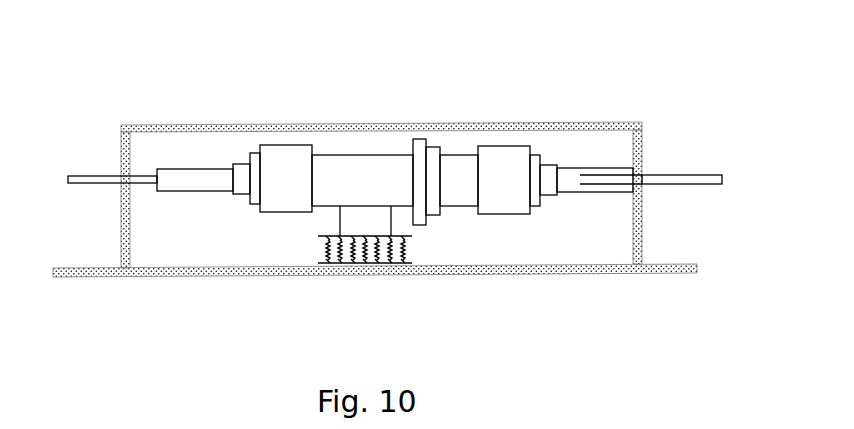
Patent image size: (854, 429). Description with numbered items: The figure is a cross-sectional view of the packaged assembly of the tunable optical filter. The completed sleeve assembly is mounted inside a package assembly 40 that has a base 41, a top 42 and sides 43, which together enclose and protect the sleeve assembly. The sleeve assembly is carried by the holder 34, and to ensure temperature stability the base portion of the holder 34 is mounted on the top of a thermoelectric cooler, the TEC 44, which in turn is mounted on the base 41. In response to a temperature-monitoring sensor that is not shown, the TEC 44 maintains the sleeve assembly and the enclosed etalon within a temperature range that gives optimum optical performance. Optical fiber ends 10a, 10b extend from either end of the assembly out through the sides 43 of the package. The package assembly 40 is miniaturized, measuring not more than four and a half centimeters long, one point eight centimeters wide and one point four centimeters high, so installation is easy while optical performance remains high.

The package assembly 40 is at (246, 60).
The base 41 is at (500, 273).
The top 42 is at (490, 127).
The sides 43 is at (123, 223).
The optical fiber input end 10a is at (98, 178).
The optical fiber output end 10b is at (687, 172).
The holder 34 is at (347, 196).
The TEC (thermoelectric cooler) 44 is at (421, 254).